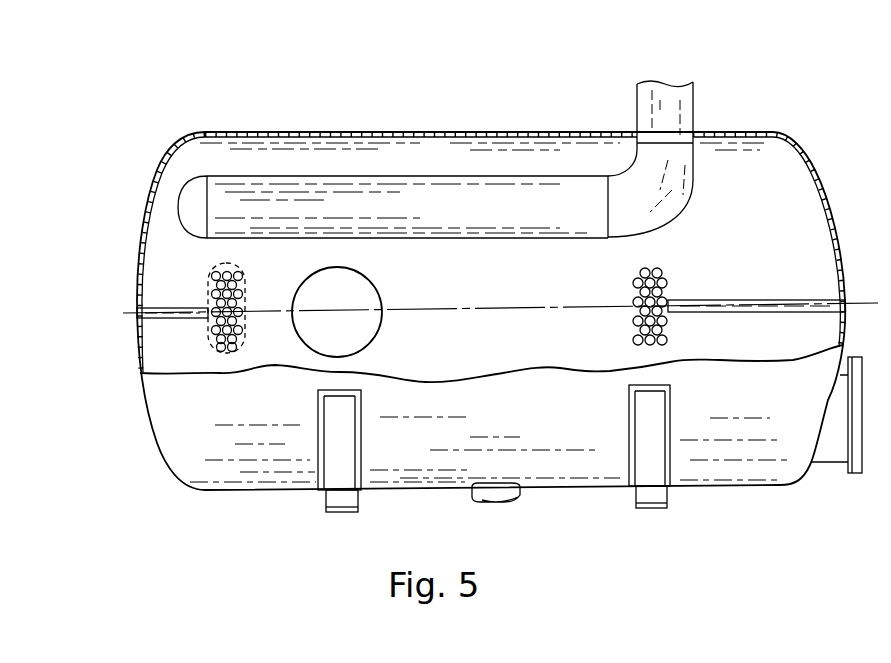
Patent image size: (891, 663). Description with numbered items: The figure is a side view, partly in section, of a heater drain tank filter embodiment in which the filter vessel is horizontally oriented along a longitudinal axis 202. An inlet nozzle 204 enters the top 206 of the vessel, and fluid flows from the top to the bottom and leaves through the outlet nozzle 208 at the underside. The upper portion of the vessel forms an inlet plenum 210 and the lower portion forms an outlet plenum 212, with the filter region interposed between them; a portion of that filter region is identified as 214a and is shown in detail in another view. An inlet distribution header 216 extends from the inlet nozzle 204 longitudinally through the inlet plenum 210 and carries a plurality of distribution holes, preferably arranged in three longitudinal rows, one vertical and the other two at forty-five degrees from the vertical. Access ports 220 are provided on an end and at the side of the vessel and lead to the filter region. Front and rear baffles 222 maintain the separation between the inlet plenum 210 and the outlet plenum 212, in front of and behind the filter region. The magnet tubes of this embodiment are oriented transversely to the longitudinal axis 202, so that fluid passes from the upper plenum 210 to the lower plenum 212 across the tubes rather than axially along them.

The longitudinal axis 202 is at (888, 281).
The inlet nozzle 204 is at (685, 158).
The top 206 is at (398, 131).
The outlet nozzle 208 is at (478, 504).
The inlet plenum 210 is at (512, 166).
The outlet plenum 212 is at (462, 362).
The portion of the filter region 214a is at (238, 266).
The inlet distribution header 216 is at (284, 176).
The access ports 220 is at (378, 292).
The front and rear baffles 222 is at (160, 308).